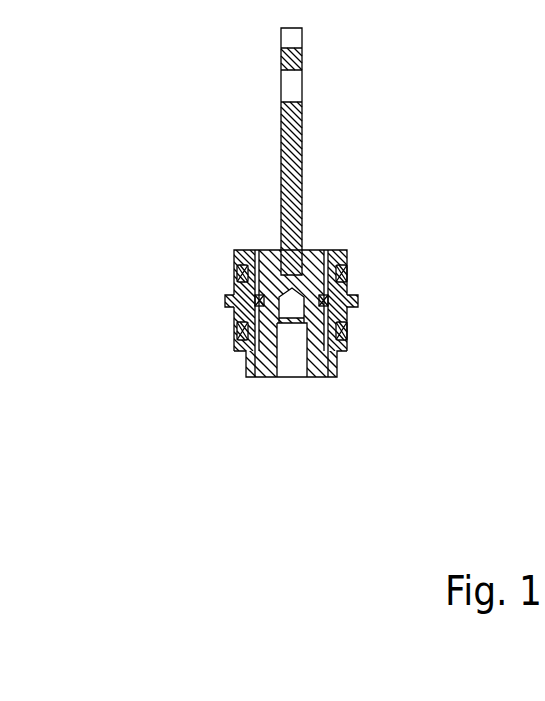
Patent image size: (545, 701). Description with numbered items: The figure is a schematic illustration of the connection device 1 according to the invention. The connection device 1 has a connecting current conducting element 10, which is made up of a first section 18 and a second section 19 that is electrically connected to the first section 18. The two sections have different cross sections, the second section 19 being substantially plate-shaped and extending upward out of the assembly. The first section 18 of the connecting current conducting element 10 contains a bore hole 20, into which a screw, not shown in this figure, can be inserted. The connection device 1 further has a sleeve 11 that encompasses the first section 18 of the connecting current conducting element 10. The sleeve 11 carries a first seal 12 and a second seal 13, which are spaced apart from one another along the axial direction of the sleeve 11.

The connection device 1 is at (207, 75).
The connecting current conducting element 10 is at (267, 247).
The sleeve 11 is at (228, 297).
The first seal 12 is at (347, 330).
The second seal 13 is at (347, 272).
The first section 18 is at (317, 358).
The second section 19 is at (302, 137).
The bore hole 20 is at (290, 363).